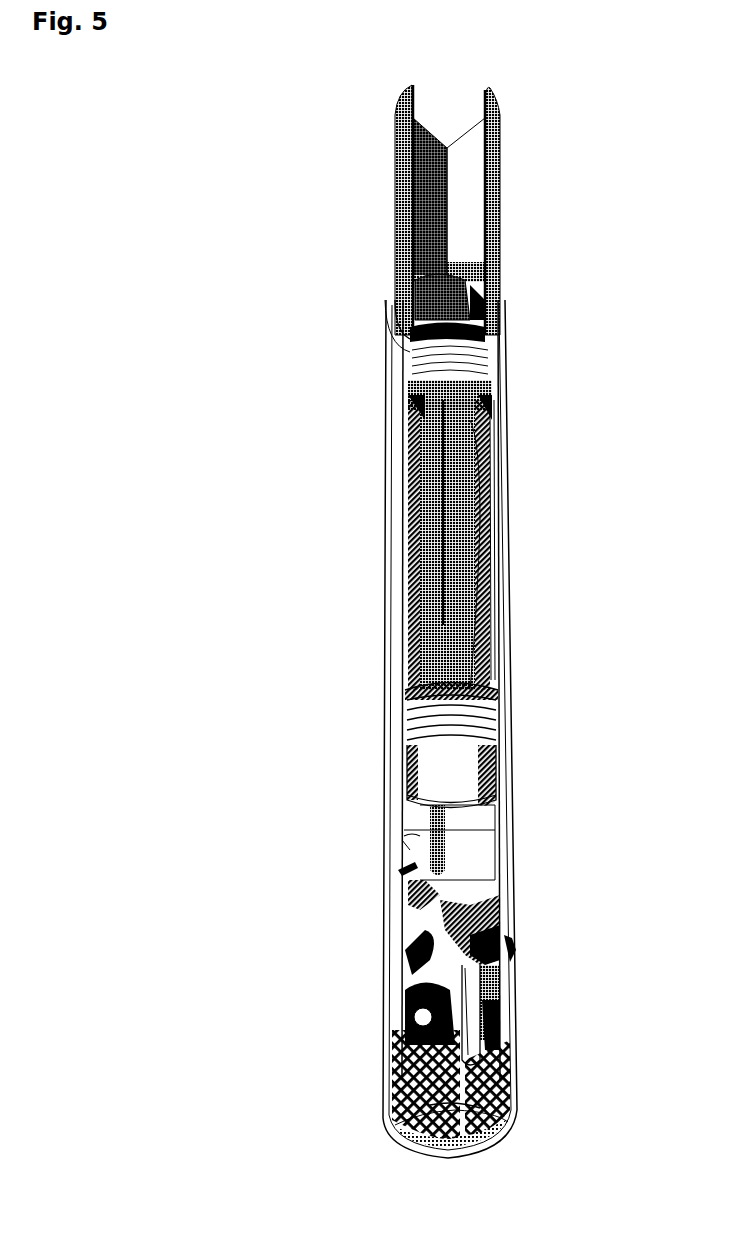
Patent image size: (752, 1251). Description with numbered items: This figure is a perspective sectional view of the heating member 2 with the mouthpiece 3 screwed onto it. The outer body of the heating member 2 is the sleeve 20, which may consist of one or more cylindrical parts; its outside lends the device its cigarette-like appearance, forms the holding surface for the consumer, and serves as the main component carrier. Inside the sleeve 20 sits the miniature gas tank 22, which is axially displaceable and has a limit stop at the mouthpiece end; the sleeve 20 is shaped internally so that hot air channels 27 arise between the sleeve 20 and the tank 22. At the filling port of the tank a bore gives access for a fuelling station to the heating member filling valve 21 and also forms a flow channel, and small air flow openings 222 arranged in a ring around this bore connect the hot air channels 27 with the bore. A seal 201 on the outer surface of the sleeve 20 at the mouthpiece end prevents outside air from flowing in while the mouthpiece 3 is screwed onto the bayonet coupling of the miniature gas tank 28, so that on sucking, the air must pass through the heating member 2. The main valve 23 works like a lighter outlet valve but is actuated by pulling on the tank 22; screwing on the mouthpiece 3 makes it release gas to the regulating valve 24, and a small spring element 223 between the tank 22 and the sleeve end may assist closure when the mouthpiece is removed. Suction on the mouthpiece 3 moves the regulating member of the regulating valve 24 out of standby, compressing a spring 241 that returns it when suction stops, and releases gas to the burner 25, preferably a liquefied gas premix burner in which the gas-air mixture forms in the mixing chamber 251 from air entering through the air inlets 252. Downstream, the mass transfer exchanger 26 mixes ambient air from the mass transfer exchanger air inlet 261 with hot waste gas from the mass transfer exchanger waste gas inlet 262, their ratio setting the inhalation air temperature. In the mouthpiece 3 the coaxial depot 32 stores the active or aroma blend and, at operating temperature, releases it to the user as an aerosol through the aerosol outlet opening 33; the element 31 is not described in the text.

The heating member 2 is at (497, 605).
The mouthpiece 3 is at (403, 203).
The sleeve 20 is at (390, 587).
The heating member filling valve 21 is at (447, 433).
The miniature gas tank 22 is at (435, 487).
The main valve 23 is at (452, 680).
The regulating valve 24 is at (450, 753).
The burner 25 is at (423, 1017).
The mass transfer exchanger 26 is at (460, 940).
The hot air channels 27 is at (467, 513).
The bayonet coupling of the miniature gas tank 28 is at (437, 293).
The cap skirt 31 is at (407, 317).
The depot 32 is at (465, 223).
The aerosol outlet opening 33 is at (450, 108).
The seal 201 is at (465, 335).
The air flow openings 222 is at (463, 398).
The spring element 223 is at (455, 363).
The spring 241 is at (453, 717).
The mixing chamber 251 is at (406, 845).
The air inlets 252 is at (406, 865).
The mass transfer exchanger air inlet 261 is at (512, 948).
The mass transfer exchanger waste gas inlet 262 is at (475, 1007).